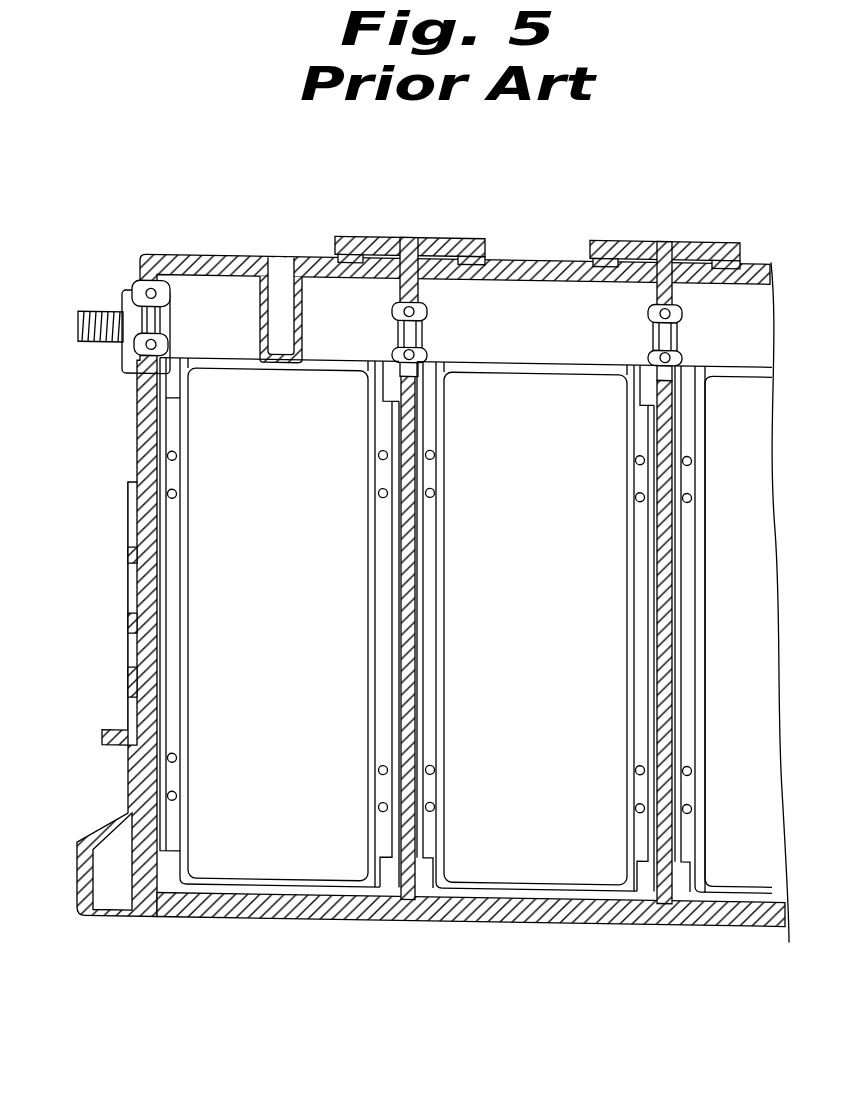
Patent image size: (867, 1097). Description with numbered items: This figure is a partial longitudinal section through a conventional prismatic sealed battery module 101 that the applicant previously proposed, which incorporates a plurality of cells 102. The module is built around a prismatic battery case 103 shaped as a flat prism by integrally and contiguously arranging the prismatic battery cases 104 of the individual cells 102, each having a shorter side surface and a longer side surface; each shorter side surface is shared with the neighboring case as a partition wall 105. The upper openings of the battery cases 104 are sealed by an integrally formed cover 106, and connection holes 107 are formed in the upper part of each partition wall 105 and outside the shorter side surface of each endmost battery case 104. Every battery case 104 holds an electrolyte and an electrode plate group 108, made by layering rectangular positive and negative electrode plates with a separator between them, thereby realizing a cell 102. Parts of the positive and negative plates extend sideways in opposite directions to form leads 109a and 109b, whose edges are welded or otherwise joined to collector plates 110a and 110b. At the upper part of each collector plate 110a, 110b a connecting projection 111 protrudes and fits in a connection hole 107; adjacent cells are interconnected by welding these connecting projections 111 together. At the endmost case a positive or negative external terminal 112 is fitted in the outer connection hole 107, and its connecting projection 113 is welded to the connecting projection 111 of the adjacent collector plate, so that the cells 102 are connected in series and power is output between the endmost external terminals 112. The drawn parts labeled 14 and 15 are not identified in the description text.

The prismatic sealed battery module 101 is at (402, 572).
The cell 102 is at (171, 880).
The prismatic battery case 103 is at (120, 590).
The prismatic battery case of a cell 104 is at (257, 347).
The partition wall 105 is at (416, 419).
The cover 106 is at (203, 252).
The connection hole 107 is at (140, 340).
The electrode plate group 108 is at (293, 544).
The lead 109a is at (179, 626).
The lead 109b is at (381, 583).
The collector plate 110a is at (158, 668).
The collector plate 110b is at (397, 618).
The connecting projection 111 is at (134, 330).
The external terminal 112 is at (100, 308).
The connecting projection of the external terminal 113 is at (118, 338).
The cap 14 is at (386, 249).
The channel 15 is at (277, 296).